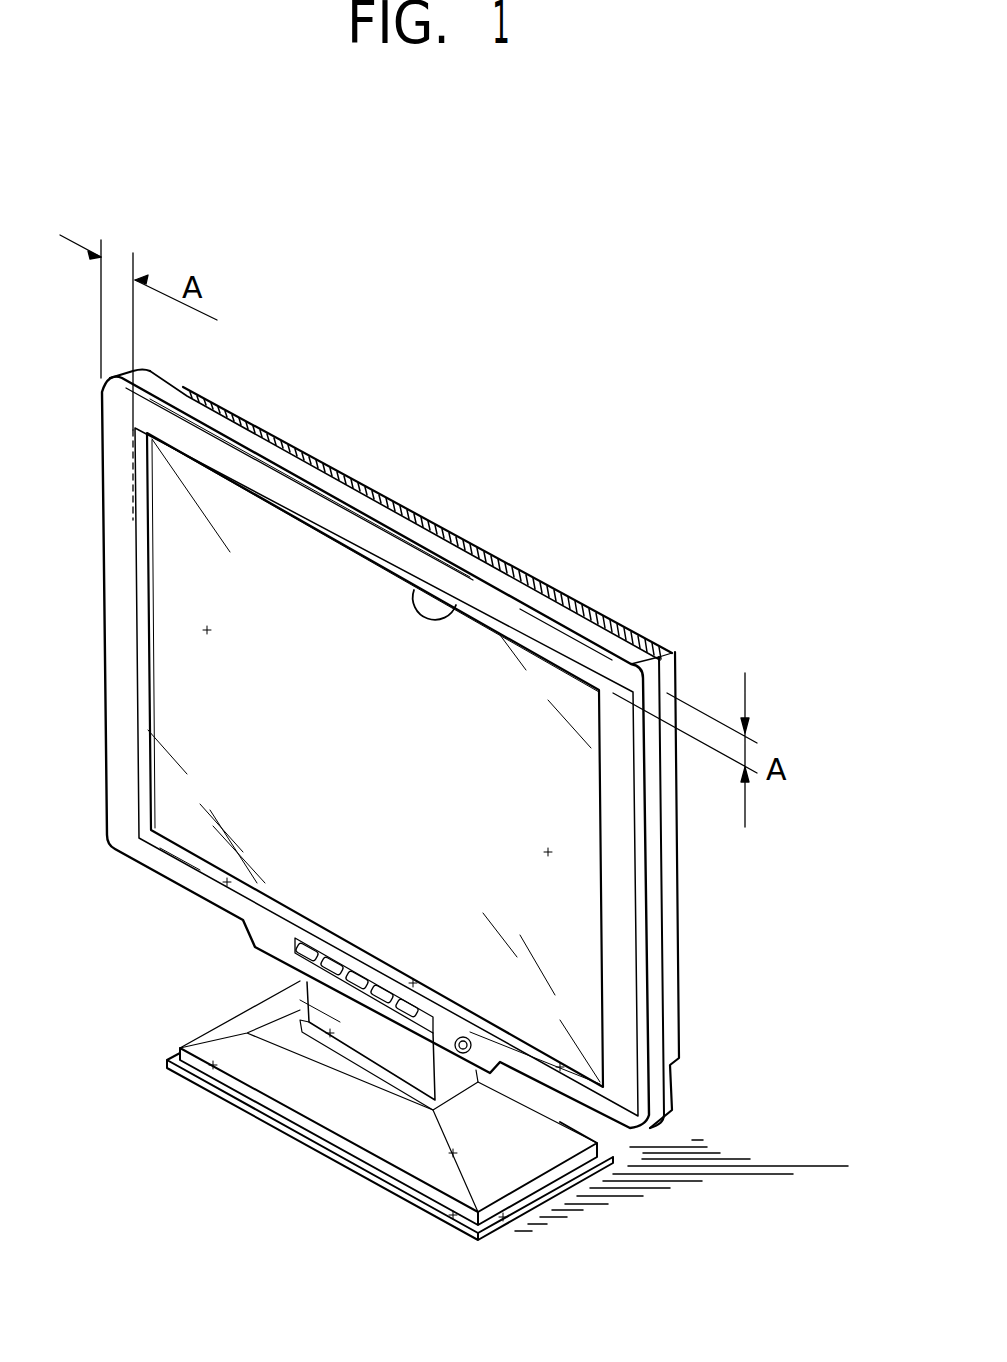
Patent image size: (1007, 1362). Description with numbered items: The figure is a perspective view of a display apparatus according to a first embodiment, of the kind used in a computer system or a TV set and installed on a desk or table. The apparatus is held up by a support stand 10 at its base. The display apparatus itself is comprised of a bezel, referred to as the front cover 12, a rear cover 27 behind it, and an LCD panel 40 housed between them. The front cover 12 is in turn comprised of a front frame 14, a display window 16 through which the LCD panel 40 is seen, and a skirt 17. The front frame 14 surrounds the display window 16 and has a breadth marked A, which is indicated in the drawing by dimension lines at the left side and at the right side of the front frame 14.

The support stand 10 is at (303, 1097).
The front cover 12 is at (531, 480).
The front frame 14 is at (280, 488).
The display window 16 is at (457, 607).
The skirt 17 is at (372, 522).
The rear cover 27 is at (675, 912).
The LCD panel 40 is at (183, 637).